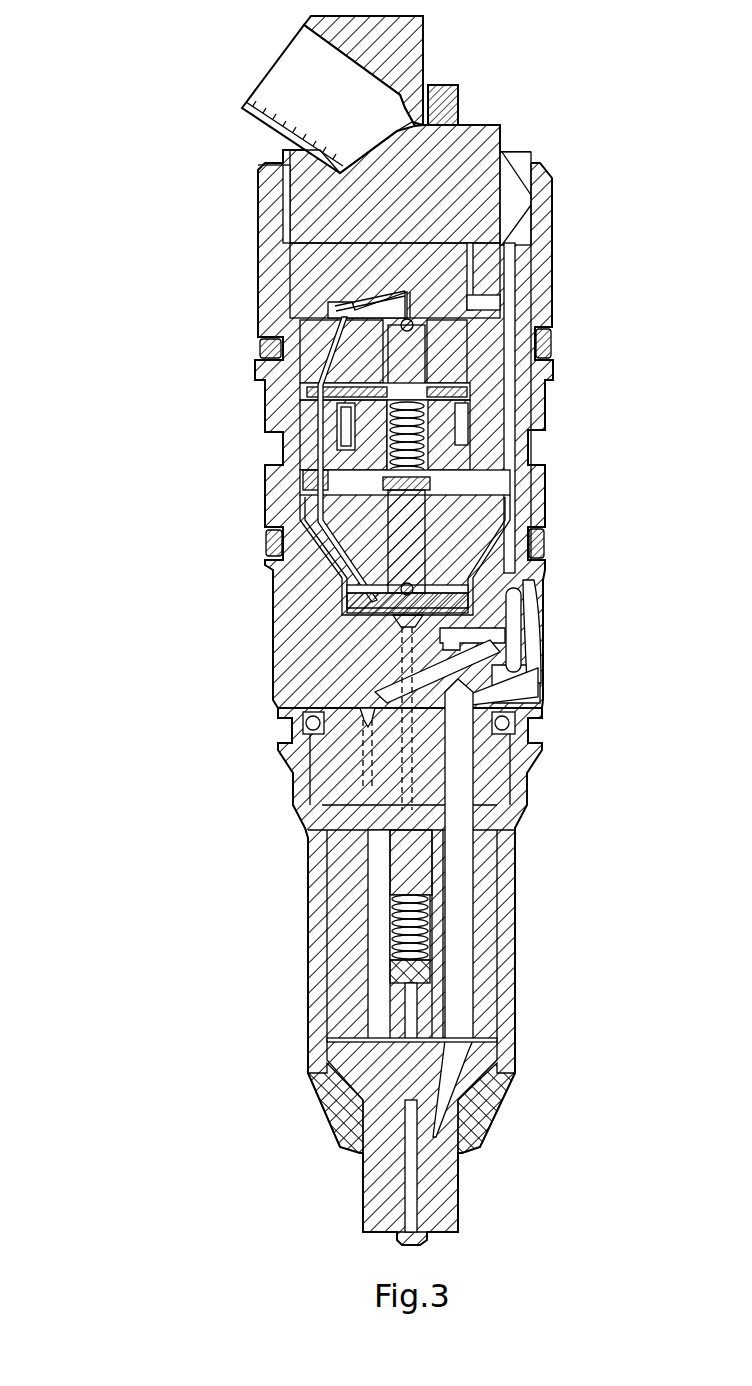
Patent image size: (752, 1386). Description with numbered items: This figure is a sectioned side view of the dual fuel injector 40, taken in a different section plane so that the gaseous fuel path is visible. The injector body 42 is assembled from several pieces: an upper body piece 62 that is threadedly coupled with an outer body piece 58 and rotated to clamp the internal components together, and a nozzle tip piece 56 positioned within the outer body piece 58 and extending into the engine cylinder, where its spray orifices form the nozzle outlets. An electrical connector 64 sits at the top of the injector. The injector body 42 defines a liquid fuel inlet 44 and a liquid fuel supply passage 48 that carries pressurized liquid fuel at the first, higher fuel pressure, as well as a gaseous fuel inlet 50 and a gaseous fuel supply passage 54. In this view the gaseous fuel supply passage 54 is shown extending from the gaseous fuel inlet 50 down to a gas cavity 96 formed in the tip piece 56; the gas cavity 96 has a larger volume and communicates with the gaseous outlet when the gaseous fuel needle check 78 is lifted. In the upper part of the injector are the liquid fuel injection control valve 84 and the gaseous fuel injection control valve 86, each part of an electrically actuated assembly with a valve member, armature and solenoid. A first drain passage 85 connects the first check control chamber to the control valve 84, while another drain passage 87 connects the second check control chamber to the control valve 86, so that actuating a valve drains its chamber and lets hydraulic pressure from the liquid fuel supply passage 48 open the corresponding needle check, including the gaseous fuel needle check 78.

The dual fuel injector 40 is at (89, 149).
The injector body 42 is at (265, 405).
The liquid fuel inlet 44 is at (538, 600).
The liquid fuel supply passage 48 is at (370, 700).
The gaseous fuel inlet 50 is at (514, 657).
The gaseous fuel supply passage 54 is at (455, 848).
The nozzle tip piece 56 is at (460, 1190).
The outer body piece 58 is at (515, 1033).
The upper body piece 62 is at (280, 590).
The electrical connector 64 is at (426, 42).
The gaseous fuel needle check 78 is at (412, 1015).
The liquid fuel injection control valve 84 is at (447, 545).
The first drain passage 85 is at (400, 628).
The gaseous fuel injection control valve 86 is at (442, 350).
The drain passage 87 is at (300, 492).
The gas cavity 96 is at (412, 1190).